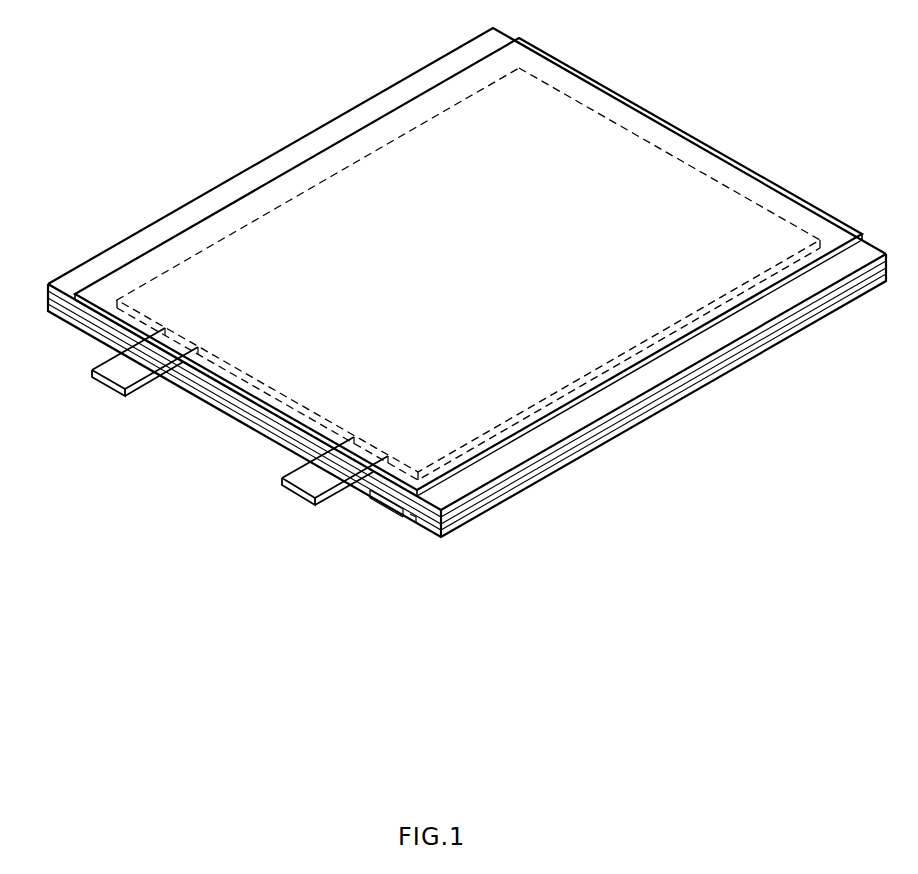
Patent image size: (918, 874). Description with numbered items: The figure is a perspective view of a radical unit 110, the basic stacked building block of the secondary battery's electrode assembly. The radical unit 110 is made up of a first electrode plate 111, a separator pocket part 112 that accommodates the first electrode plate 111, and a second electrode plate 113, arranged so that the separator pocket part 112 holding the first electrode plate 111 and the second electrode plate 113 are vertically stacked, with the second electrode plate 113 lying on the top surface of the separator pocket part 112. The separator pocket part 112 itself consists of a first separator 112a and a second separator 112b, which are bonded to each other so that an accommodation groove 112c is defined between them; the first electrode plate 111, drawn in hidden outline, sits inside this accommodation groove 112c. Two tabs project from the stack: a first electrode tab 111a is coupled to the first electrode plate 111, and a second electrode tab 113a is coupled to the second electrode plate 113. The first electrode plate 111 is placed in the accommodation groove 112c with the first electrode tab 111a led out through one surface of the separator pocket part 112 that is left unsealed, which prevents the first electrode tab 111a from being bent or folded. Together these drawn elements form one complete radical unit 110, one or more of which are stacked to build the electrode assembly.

The radical unit 110 is at (447, 347).
The first electrode plate 111 is at (562, 388).
The first electrode tab 111a is at (117, 375).
The separator pocket part 112 is at (467, 344).
The first separator 112a is at (442, 520).
The second separator 112b is at (420, 520).
The accommodation groove 112c is at (200, 385).
The second electrode plate 113 is at (468, 264).
The second electrode tab 113a is at (305, 483).